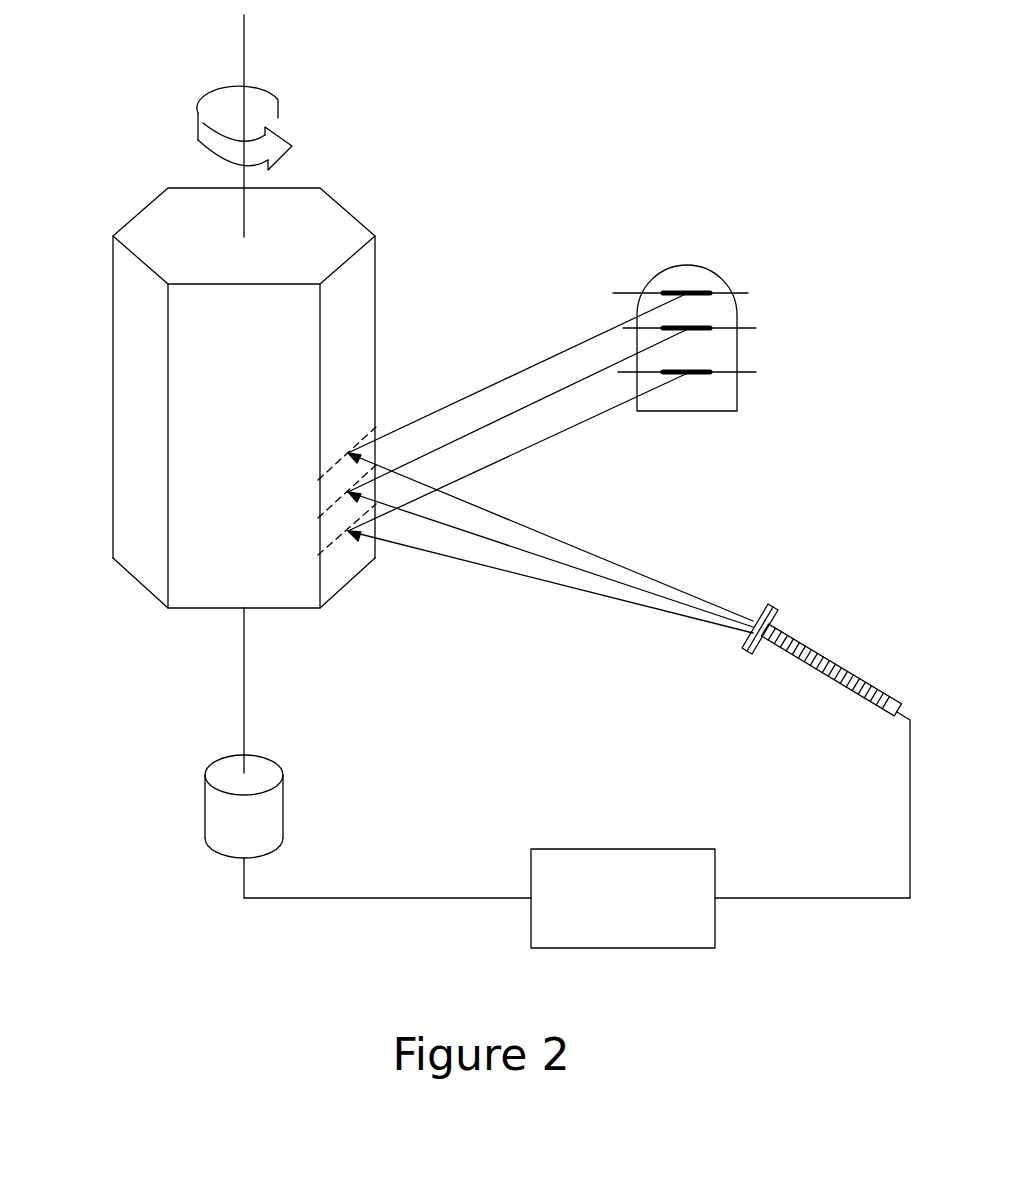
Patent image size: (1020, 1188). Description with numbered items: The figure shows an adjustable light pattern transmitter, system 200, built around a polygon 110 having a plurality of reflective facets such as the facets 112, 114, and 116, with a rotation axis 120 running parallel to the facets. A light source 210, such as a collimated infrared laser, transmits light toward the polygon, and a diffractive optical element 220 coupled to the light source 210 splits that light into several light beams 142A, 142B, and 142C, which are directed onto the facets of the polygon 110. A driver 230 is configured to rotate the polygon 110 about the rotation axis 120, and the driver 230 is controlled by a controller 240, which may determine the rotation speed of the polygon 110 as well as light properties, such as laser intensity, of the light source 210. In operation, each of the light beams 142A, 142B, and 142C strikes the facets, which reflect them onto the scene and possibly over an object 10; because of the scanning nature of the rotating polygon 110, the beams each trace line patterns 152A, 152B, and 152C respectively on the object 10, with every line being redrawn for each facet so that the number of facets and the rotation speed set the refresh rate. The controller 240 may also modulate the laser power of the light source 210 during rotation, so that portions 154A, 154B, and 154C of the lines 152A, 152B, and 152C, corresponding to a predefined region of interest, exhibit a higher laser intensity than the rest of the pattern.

The object 10 is at (660, 272).
The polygon 110 is at (366, 178).
The reflective facet 112 is at (367, 313).
The reflective facet 114 is at (208, 597).
The reflective facet 116 is at (122, 375).
The rotation axis 120 is at (243, 53).
The light beam 142A is at (645, 540).
The light beam 142B is at (490, 540).
The light beam 142C is at (538, 583).
The line pattern 152A is at (743, 300).
The line pattern 152B is at (742, 332).
The line pattern 152C is at (743, 374).
The line portion 154A is at (695, 292).
The line portion 154B is at (700, 326).
The line portion 154C is at (698, 375).
The system 200 is at (509, 741).
The light source 210 is at (825, 655).
The diffractive optical element 220 is at (770, 607).
The driver 230 is at (204, 808).
The controller 240 is at (621, 848).